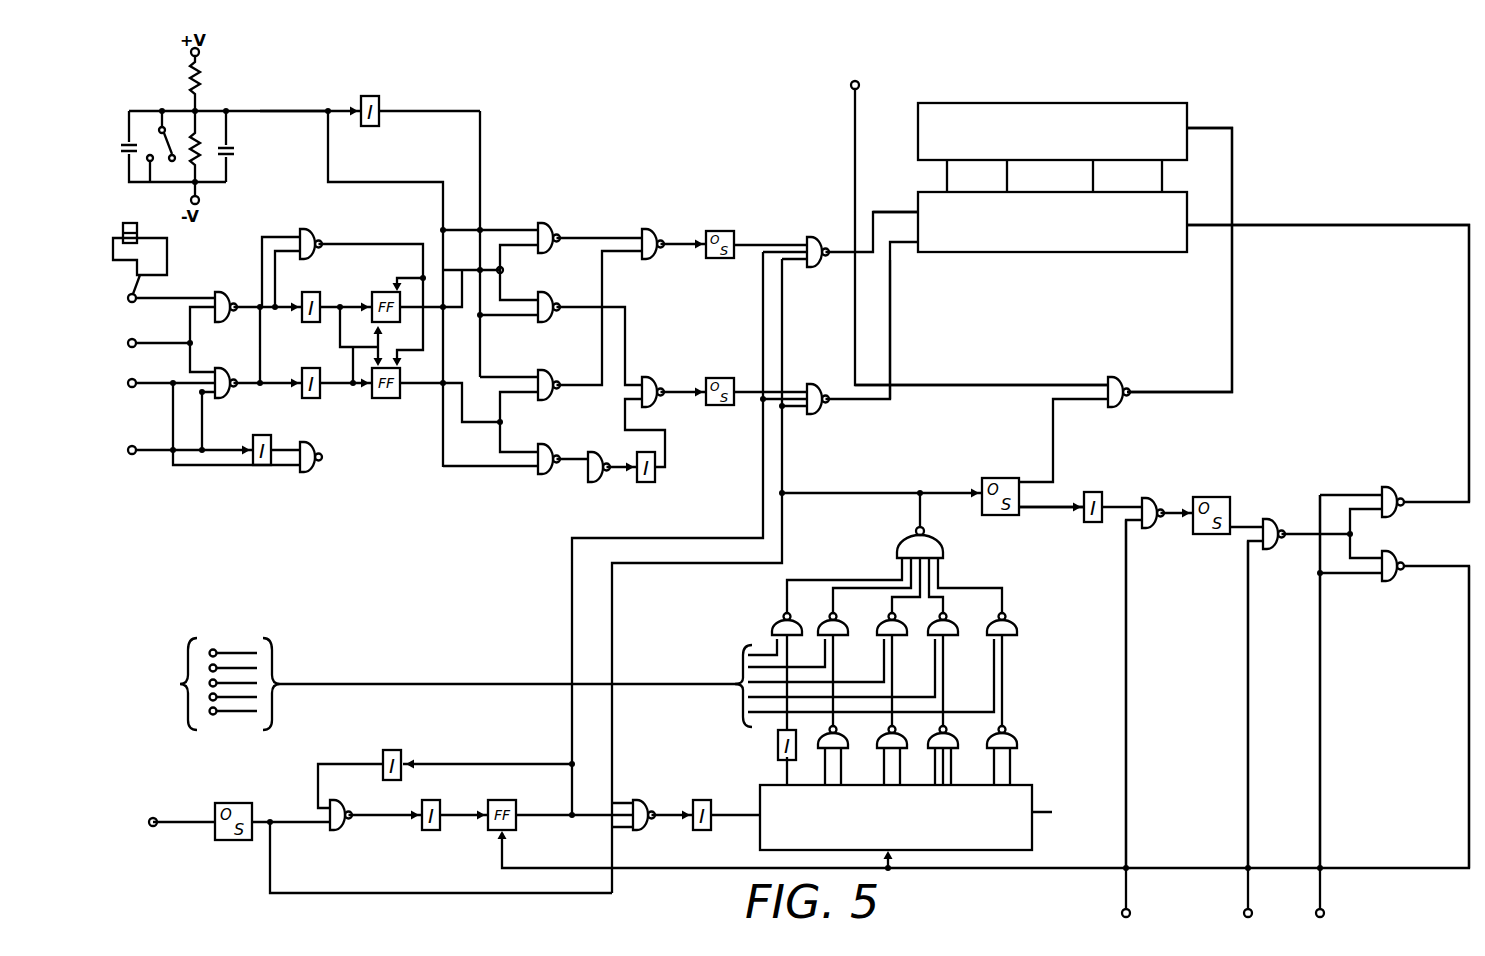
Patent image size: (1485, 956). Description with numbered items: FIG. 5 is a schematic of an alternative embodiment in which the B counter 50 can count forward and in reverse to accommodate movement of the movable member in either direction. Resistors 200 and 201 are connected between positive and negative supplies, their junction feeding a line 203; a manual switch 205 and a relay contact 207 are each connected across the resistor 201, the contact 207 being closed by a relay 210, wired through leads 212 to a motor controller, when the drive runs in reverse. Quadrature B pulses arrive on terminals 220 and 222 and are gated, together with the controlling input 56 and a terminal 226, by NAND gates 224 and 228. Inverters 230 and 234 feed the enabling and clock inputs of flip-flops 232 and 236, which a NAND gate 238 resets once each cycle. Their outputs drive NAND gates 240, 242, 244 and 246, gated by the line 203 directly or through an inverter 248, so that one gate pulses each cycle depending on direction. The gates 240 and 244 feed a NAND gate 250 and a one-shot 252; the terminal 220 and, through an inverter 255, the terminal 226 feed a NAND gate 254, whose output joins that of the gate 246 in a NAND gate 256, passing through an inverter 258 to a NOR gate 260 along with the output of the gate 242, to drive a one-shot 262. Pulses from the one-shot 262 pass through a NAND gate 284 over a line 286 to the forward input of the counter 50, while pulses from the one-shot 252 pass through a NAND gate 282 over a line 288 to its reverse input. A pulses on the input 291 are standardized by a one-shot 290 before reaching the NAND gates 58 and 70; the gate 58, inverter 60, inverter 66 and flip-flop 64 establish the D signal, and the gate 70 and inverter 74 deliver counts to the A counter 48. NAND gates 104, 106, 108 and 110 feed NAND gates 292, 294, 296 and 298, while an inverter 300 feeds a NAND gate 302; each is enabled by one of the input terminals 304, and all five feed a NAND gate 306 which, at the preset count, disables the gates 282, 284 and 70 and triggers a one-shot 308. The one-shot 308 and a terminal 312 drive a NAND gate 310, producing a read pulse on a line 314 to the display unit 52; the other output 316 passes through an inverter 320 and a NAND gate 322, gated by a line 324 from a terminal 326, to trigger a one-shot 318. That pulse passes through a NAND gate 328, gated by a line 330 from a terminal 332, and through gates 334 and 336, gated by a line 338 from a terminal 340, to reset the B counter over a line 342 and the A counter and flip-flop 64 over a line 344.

The A counter 48 is at (1032, 812).
The B counter 50 is at (995, 252).
The display unit 52 is at (1030, 102).
The signal controlling input 56 is at (130, 339).
The NAND gate 58 is at (340, 832).
The inverter 60 is at (400, 751).
The control flip-flop 64 is at (500, 800).
The inverter 66 is at (431, 832).
The NAND gate 70 is at (641, 801).
The inverter 74 is at (703, 800).
The NAND gate 104 is at (828, 737).
The NAND gate 106 is at (886, 736).
The NAND gate 108 is at (937, 736).
The NAND gate 110 is at (1010, 737).
The resistor 200 is at (203, 84).
The resistor 201 is at (199, 140).
The line 203 is at (300, 110).
The switch 205 is at (162, 126).
The relay contact 207 is at (112, 148).
The relay 210 is at (132, 222).
The leads 212 is at (137, 270).
The terminal 220 is at (130, 379).
The terminal 222 is at (136, 302).
The NAND gate 224 is at (236, 360).
The terminal 226 is at (130, 446).
The NAND gate 228 is at (233, 284).
The inverter 230 is at (311, 367).
The flip-flop 232 is at (390, 400).
The inverter 234 is at (311, 290).
The flip-flop 236 is at (385, 290).
The NAND gate 238 is at (316, 231).
The NAND gate 240 is at (542, 224).
The NAND gate 242 is at (543, 293).
The NAND gate 244 is at (545, 371).
The NAND gate 246 is at (545, 445).
The inverter 248 is at (380, 100).
The NAND gate 250 is at (650, 230).
The one-shot multivibrator 252 is at (716, 231).
The NAND gate 254 is at (307, 472).
The inverter 255 is at (268, 436).
The NAND gate 256 is at (596, 483).
The inverter 258 is at (646, 483).
The NOR gate 260 is at (657, 367).
The one-shot multivibrator 262 is at (735, 375).
The NAND gate 282 is at (818, 236).
The NAND gate 284 is at (818, 414).
The line 286 is at (892, 320).
The line 288 is at (895, 196).
The one-shot multivibrator 290 is at (236, 803).
The input terminal 291 is at (156, 818).
The NAND gate 292 is at (830, 614).
The NAND gate 294 is at (886, 616).
The NAND gate 296 is at (952, 620).
The NAND gate 298 is at (1012, 618).
The inverter 300 is at (778, 742).
The NAND gate 302 is at (780, 617).
The input terminals 304 is at (180, 684).
The NAND gate 306 is at (897, 549).
The one-shot multivibrator 308 is at (1030, 372).
The NAND gate 310 is at (1118, 378).
The terminal 312 is at (858, 82).
The line 314 is at (1190, 393).
The line 316 is at (1050, 513).
The one-shot multivibrator 318 is at (1213, 496).
The inverter 320 is at (1096, 491).
The NAND gate 322 is at (1150, 497).
The line 324 is at (1128, 716).
The terminal 326 is at (1122, 916).
The NAND gate 328 is at (1273, 519).
The line 330 is at (1250, 730).
The terminal 332 is at (1244, 916).
The gate 334 is at (1392, 487).
The gate 336 is at (1393, 582).
The line 338 is at (1322, 723).
The terminal 340 is at (1324, 914).
The line 342 is at (1467, 352).
The line 344 is at (1467, 705).